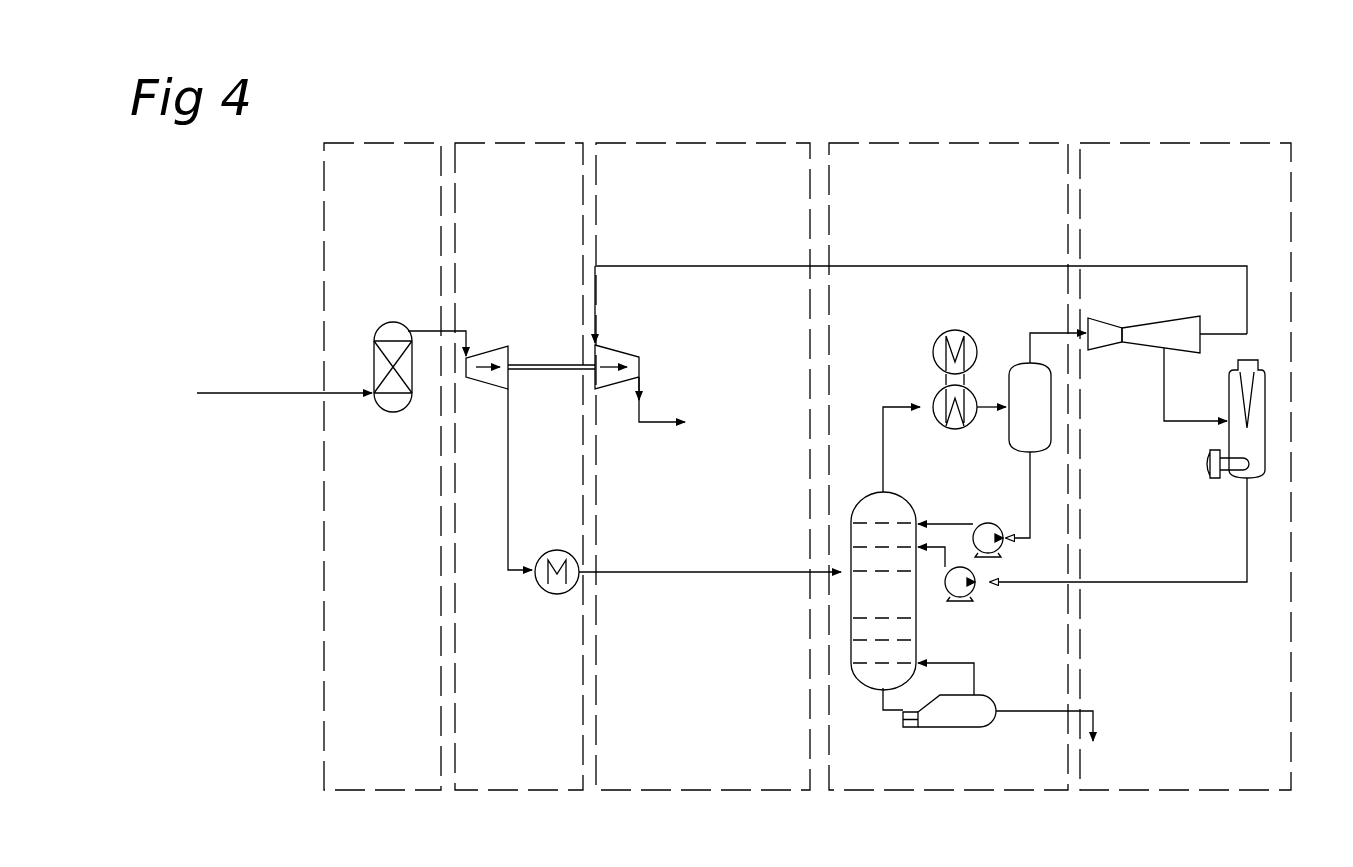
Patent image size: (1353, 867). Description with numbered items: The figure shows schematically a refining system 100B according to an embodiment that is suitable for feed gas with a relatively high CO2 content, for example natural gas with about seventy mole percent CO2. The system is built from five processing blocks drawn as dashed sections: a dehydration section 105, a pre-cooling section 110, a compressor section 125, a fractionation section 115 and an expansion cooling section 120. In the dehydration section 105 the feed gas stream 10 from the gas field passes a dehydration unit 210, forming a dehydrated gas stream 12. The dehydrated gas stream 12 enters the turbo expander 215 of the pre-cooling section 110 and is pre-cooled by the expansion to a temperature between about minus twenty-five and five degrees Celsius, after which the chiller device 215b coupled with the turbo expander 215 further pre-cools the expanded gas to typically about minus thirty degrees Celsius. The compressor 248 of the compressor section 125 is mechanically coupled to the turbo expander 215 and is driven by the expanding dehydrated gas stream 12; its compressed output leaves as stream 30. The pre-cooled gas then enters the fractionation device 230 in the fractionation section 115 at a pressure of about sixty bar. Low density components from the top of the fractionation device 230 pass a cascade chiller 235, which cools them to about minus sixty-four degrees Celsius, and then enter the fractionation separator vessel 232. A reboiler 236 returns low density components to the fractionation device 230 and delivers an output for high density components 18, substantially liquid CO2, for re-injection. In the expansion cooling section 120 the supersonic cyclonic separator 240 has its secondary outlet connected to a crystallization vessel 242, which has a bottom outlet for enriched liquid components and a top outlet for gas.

The refining system 100B is at (845, 108).
The dehydration section 105 is at (374, 143).
The pre-cooling section 110 is at (519, 143).
The compressor section 125 is at (705, 143).
The fractionation section 115 is at (957, 143).
The expansion cooling section 120 is at (1183, 143).
The feed gas stream 10 is at (260, 393).
The dehydrated gas stream 12 is at (422, 328).
The dehydration unit 210 is at (397, 411).
The turbo expander 215 is at (502, 352).
The chiller device 215b is at (548, 550).
The compressor 248 is at (617, 376).
The product gas stream 30 is at (658, 422).
The fractionation device 230 is at (872, 513).
The cascade chiller 235 is at (940, 400).
The fractionation separator vessel 232 is at (1020, 377).
The reboiler 236 is at (953, 714).
The supersonic cyclonic separator 240 is at (1162, 334).
The crystallization vessel 242 is at (1260, 408).
The output for high density components 18 is at (1098, 716).